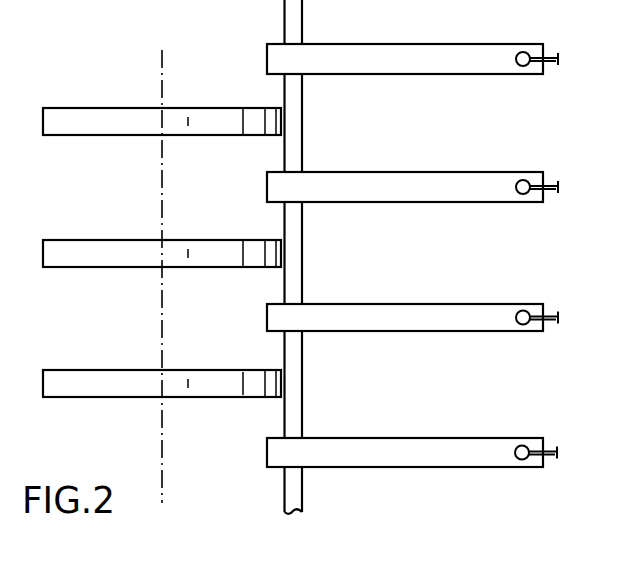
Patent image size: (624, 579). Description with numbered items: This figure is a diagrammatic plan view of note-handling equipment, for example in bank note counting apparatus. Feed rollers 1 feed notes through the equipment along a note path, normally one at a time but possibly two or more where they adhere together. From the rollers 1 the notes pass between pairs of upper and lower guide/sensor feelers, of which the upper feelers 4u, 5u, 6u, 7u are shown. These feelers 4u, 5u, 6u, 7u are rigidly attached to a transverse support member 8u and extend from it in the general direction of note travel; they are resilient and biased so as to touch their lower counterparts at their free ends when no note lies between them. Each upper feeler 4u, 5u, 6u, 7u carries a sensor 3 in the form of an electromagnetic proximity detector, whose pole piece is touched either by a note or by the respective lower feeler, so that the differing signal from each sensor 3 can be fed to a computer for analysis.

The feed roller 1 is at (238, 109).
The sensor 3 is at (527, 53).
The upper guide/sensor feeler 4u is at (420, 44).
The upper guide/sensor feeler 5u is at (425, 172).
The upper guide/sensor feeler 6u is at (440, 304).
The upper guide/sensor feeler 7u is at (428, 438).
The upper transverse support member 8u is at (284, 22).